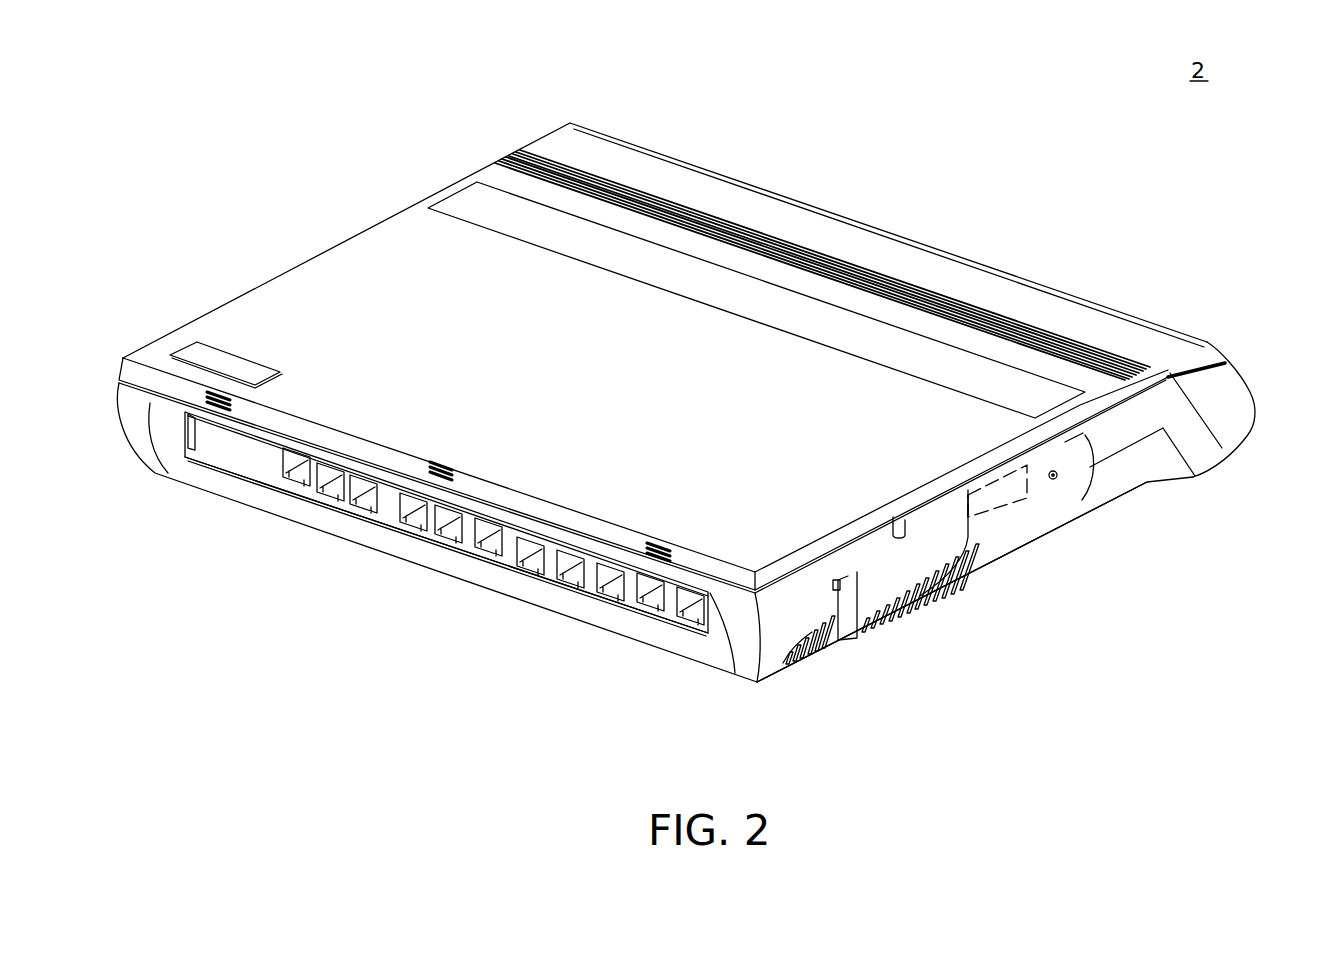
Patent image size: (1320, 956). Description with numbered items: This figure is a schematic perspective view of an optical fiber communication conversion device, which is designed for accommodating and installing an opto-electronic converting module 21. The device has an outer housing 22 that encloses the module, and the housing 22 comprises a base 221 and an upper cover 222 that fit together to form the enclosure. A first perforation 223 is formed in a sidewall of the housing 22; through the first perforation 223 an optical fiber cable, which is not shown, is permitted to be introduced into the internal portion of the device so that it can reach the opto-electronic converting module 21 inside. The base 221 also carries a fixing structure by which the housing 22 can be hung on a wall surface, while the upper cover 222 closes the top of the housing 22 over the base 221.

The opto-electronic converting module 21 is at (480, 551).
The housing 22 is at (118, 401).
The base 221 is at (1015, 539).
The upper cover 222 is at (1210, 352).
The first perforation 223 is at (900, 538).